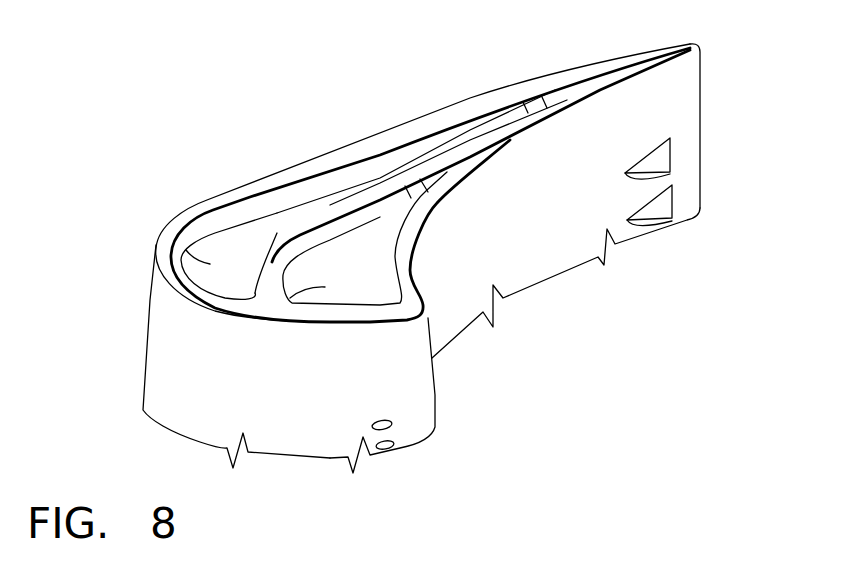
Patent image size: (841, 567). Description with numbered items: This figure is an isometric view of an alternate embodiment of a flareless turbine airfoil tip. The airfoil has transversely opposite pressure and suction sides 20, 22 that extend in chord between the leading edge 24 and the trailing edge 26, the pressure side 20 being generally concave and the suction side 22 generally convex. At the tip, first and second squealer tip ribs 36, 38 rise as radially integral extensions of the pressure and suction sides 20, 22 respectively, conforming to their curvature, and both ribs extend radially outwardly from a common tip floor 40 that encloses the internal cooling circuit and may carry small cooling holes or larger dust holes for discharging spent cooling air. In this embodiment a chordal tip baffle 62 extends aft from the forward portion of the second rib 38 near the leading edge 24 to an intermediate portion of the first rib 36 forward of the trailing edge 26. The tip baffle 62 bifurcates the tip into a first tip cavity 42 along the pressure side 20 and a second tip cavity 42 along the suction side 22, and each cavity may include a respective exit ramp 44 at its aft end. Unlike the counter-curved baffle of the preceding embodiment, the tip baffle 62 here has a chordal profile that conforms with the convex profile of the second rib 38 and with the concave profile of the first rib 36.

The pressure side 20 is at (501, 243).
The suction side 22 is at (186, 403).
The leading edge 24 is at (436, 397).
The trailing edge 26 is at (702, 128).
The first squealer tip rib 36 is at (483, 152).
The second squealer tip rib 38 is at (335, 150).
The tip floor 40 is at (217, 266).
The tip cavity 42 is at (190, 257).
The exit ramp 44 is at (527, 95).
The tip baffle 62 is at (277, 233).